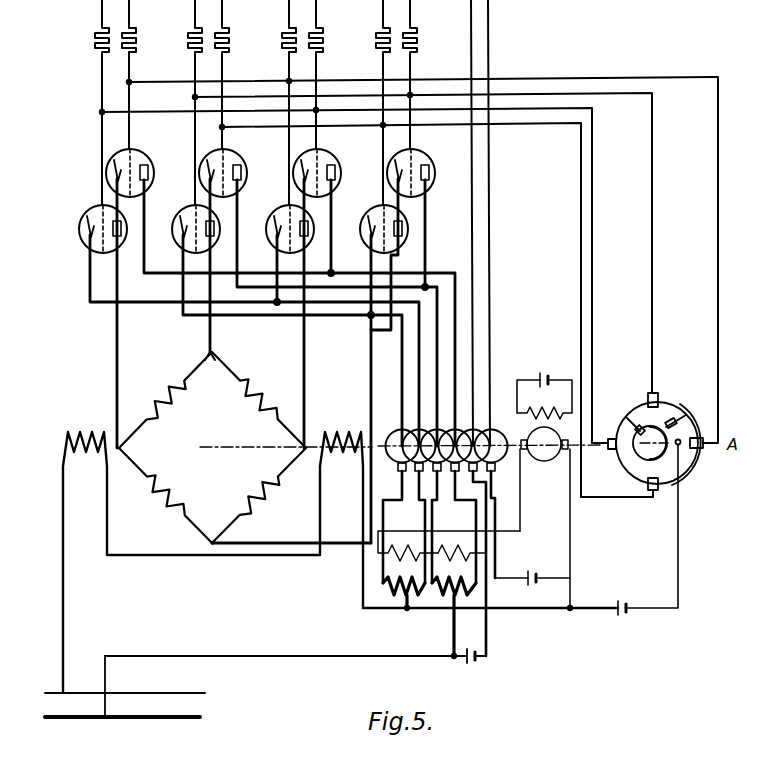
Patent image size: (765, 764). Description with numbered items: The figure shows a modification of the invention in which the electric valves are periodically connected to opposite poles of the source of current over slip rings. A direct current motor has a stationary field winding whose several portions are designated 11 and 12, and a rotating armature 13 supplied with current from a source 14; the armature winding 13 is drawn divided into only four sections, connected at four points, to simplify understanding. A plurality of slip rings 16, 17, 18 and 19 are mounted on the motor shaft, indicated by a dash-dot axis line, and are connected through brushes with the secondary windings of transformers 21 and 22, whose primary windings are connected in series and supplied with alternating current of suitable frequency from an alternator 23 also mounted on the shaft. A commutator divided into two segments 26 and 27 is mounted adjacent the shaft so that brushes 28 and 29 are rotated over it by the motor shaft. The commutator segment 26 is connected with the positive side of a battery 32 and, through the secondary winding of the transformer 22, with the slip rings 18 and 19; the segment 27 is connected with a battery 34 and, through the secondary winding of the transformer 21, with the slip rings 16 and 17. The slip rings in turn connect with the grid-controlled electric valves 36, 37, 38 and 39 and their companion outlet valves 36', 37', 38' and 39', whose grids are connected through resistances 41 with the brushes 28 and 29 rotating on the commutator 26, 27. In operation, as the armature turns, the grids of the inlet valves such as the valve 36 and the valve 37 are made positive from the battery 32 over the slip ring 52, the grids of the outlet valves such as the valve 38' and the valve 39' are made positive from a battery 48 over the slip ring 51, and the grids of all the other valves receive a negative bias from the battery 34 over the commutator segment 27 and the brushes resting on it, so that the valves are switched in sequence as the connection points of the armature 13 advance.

The field winding portion 11 is at (78, 468).
The field winding portion 12 is at (336, 468).
The rotating armature 13 is at (218, 423).
The source of current 14 is at (211, 694).
The slip ring 16 is at (400, 428).
The slip ring 17 is at (417, 428).
The slip ring 18 is at (435, 428).
The slip ring 19 is at (453, 428).
The transformer 21 is at (390, 566).
The transformer 22 is at (472, 568).
The alternator 23 is at (526, 428).
The commutator segment 26 is at (672, 414).
The commutator segment 27 is at (702, 462).
The brush 28 is at (648, 400).
The brush 29 is at (611, 451).
The battery 32 is at (479, 652).
The battery 34 is at (628, 602).
The electric valve 36 is at (426, 173).
The electric valve 36' is at (408, 229).
The electric valve 37 is at (333, 173).
The electric valve 37' is at (314, 229).
The electric valve 38 is at (238, 173).
The electric valve 38' is at (220, 229).
The electric valve 39 is at (145, 173).
The electric valve 39' is at (127, 229).
The resistance 41 is at (428, 24).
The battery 48 is at (538, 576).
The slip ring 51 is at (489, 428).
The slip ring 52 is at (471, 428).